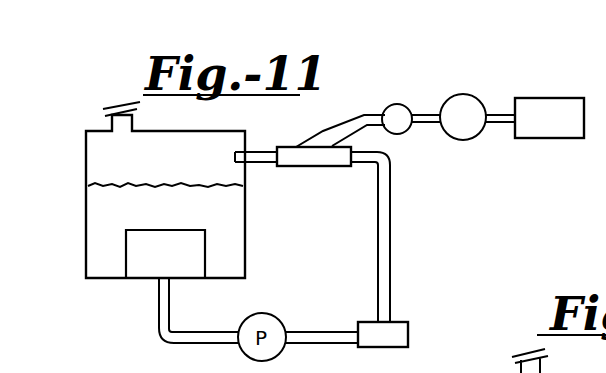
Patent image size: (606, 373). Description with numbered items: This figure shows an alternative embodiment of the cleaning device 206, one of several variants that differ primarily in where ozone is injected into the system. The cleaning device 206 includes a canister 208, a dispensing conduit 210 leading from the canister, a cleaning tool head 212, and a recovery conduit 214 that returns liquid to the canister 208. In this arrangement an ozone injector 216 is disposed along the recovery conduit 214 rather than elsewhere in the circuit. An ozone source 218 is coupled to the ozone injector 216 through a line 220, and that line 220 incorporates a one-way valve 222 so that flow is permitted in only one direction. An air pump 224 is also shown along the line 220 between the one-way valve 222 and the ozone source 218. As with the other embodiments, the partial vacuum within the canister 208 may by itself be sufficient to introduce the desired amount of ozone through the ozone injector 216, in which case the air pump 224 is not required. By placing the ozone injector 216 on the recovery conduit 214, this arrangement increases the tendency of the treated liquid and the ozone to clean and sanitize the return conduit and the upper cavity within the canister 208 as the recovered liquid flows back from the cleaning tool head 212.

The cleaning device 206 is at (95, 118).
The canister 208 is at (86, 240).
The dispensing conduit 210 is at (158, 312).
The cleaning tool head 212 is at (400, 322).
The recovery conduit 214 is at (388, 254).
The ozone injector 216 is at (313, 136).
The ozone source 218 is at (535, 98).
The line 220 is at (494, 113).
The one-way valve 222 is at (382, 105).
The air pump 224 is at (445, 95).